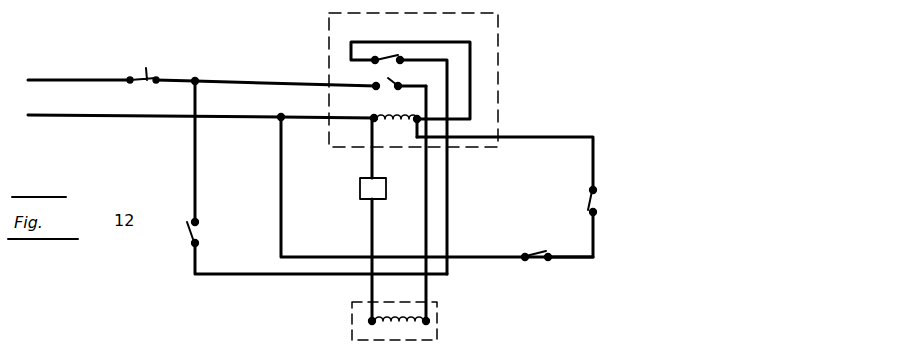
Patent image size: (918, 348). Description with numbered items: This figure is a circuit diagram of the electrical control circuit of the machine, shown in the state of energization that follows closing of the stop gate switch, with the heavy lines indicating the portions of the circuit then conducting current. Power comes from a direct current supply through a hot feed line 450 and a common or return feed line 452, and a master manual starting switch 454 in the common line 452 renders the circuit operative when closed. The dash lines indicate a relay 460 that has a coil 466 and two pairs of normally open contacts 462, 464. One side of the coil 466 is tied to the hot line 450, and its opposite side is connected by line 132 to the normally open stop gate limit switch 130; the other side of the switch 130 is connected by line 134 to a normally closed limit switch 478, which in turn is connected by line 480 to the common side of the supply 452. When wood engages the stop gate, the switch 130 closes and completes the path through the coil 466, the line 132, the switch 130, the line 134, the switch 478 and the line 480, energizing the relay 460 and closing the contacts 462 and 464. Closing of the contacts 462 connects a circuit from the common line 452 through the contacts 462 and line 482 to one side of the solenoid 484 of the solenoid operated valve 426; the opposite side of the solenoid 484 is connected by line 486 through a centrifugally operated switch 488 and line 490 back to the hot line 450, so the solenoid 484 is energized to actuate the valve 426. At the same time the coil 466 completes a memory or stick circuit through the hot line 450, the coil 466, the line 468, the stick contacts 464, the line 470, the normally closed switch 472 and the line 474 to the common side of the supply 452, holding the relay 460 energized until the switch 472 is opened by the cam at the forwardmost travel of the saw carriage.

The switch 130 is at (604, 205).
The lead 132 is at (594, 165).
The lead 134 is at (594, 247).
The valve 426 is at (440, 320).
The hot feed line 450 is at (64, 118).
The common or return feed line 452 is at (60, 80).
The master manual starting switch 454 is at (152, 74).
The relay 460 is at (498, 43).
The contacts 462 is at (393, 87).
The contacts 464 is at (390, 58).
The coil 466 is at (409, 122).
The line 468 is at (470, 95).
The line 470 is at (447, 212).
The switch 472 is at (190, 238).
The line 474 is at (195, 176).
The limit switch 478 is at (533, 262).
The line 480 is at (280, 180).
The line 482 is at (425, 198).
The solenoid 484 is at (385, 318).
The line 486 is at (372, 222).
The centrifugally operated switch 488 is at (360, 189).
The line 490 is at (372, 157).